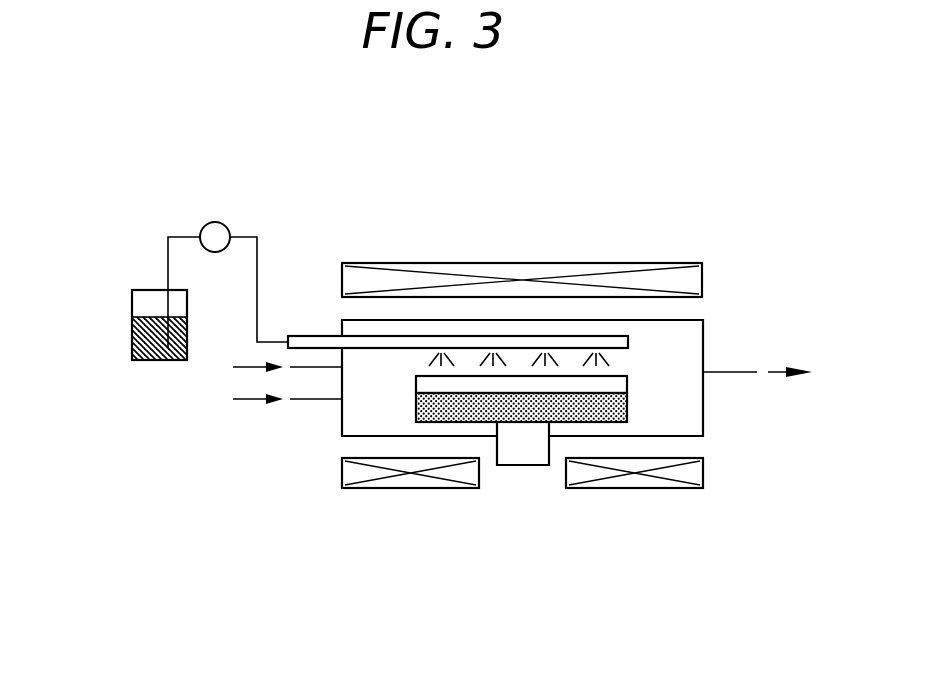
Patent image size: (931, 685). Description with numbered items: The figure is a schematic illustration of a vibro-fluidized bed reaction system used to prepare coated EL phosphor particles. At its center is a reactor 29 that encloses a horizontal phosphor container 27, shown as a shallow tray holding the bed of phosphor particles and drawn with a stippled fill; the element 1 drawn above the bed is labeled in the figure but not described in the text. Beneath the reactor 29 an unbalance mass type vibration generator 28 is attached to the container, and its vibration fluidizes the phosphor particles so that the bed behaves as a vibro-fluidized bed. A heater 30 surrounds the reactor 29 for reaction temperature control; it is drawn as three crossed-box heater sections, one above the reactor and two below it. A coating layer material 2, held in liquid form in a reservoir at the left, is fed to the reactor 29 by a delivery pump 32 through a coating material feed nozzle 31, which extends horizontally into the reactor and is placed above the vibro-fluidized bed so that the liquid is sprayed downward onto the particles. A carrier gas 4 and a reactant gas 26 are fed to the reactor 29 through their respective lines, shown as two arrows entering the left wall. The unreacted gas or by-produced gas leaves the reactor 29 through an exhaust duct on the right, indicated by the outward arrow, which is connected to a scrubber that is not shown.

The substrate 1 is at (627, 382).
The coating layer material 2 is at (142, 334).
The carrier gas 4 is at (274, 367).
The reactant gas 26 is at (266, 399).
The horizontal phosphor container 27 is at (627, 406).
The unbalance mass type vibration generator 28 is at (522, 453).
The reactor 29 is at (343, 424).
The heater 30 is at (518, 283).
The coating material feed nozzle 31 is at (322, 336).
The delivery pump 32 is at (215, 222).